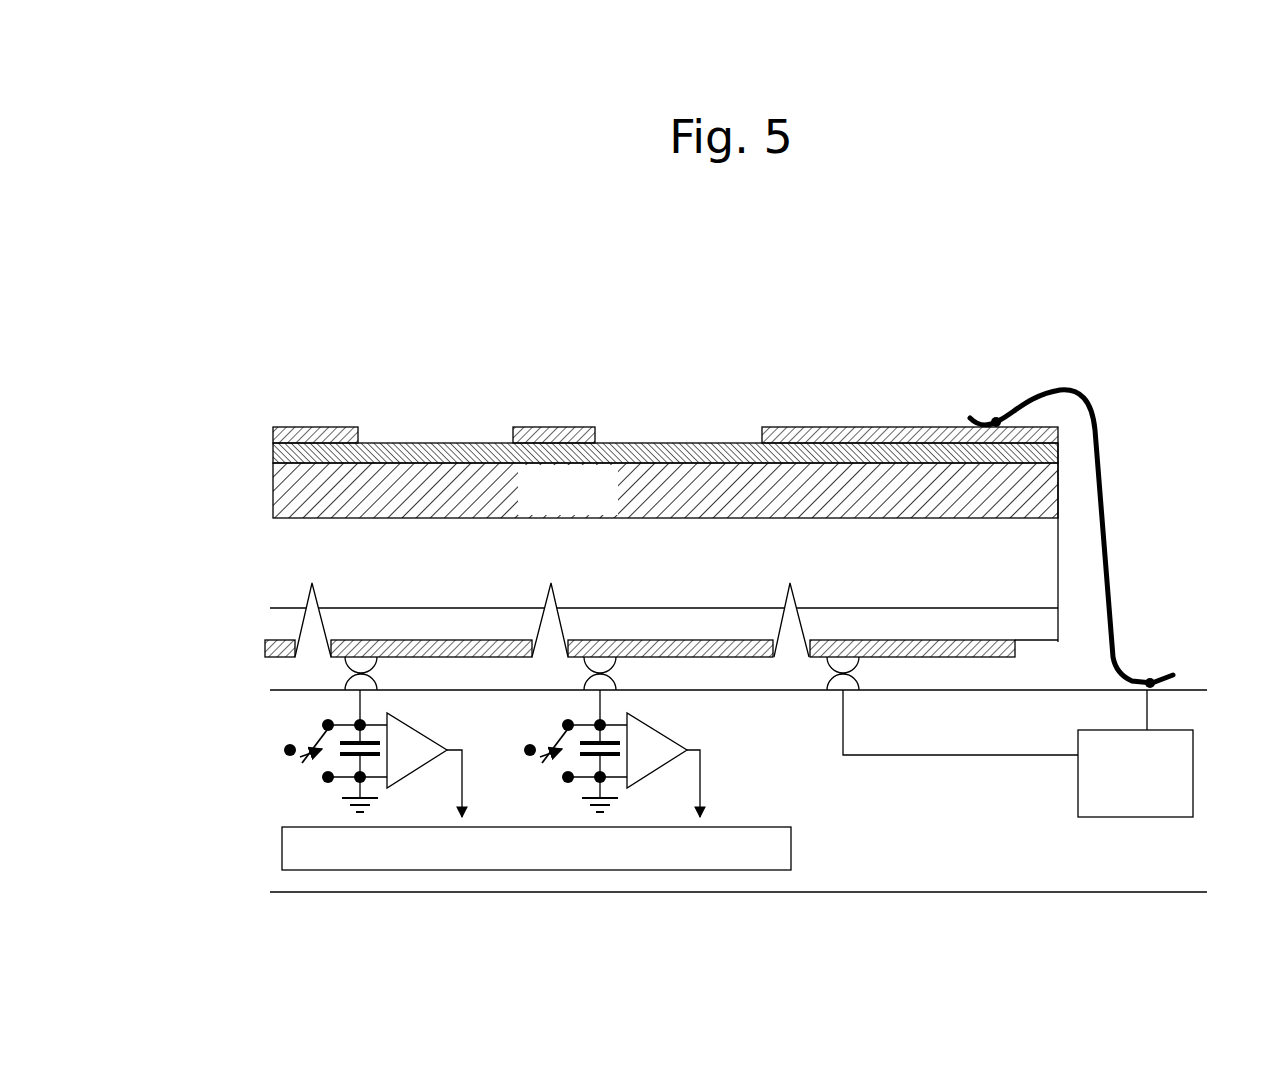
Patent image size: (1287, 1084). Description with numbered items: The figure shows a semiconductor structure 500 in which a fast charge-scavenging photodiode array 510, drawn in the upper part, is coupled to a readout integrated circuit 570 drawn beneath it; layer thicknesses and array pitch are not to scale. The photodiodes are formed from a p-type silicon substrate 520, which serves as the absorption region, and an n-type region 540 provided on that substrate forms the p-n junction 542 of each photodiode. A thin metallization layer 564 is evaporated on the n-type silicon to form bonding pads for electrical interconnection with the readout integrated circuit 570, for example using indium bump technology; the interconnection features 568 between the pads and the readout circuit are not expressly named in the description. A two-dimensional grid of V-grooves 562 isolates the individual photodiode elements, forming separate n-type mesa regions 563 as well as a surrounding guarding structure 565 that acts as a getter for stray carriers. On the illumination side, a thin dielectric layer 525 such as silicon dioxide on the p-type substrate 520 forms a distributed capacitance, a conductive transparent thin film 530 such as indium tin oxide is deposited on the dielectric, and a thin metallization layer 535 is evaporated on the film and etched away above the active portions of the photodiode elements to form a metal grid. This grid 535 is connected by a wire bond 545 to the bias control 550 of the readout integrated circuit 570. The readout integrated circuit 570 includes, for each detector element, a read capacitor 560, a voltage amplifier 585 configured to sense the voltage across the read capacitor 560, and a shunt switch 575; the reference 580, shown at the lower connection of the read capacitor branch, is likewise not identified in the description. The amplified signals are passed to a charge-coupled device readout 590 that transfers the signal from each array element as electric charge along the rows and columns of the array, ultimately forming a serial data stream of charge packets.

The semiconductor structure 500 is at (185, 368).
The fast charge-scavenging photodiode array 510 is at (257, 427).
The p-type silicon substrate 520 is at (648, 547).
The thin dielectric layer 525 is at (759, 598).
The conductive transparent thin film 530 is at (377, 443).
The thin metallization layer 535 is at (286, 427).
The n-type region 540 is at (405, 622).
The p-n junction 542 is at (848, 490).
The wire bond 545 is at (1085, 395).
The bias control 550 is at (1078, 782).
The read capacitor 560 is at (586, 736).
The V-grooves 562 is at (800, 612).
The n-type mesa regions 563 is at (787, 328).
The thin metallization layer 564 is at (913, 640).
The guarding structure 565 is at (802, 328).
The bump bond 568 is at (868, 686).
The readout integrated circuit 570 is at (257, 688).
The shunt switch 575 is at (405, 753).
The ground connection 580 is at (575, 751).
The voltage amplifier 585 is at (667, 762).
The CCD readout 590 is at (792, 850).